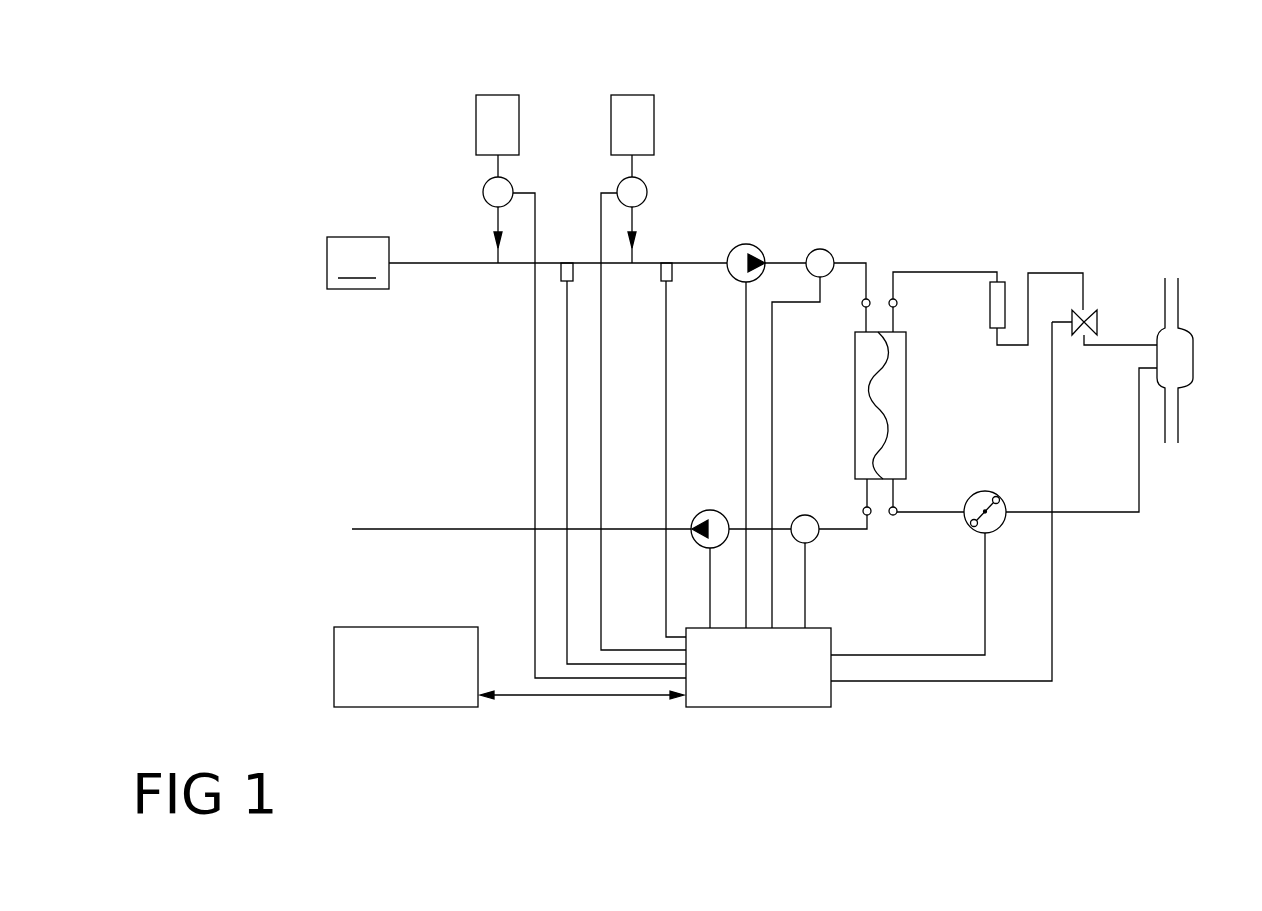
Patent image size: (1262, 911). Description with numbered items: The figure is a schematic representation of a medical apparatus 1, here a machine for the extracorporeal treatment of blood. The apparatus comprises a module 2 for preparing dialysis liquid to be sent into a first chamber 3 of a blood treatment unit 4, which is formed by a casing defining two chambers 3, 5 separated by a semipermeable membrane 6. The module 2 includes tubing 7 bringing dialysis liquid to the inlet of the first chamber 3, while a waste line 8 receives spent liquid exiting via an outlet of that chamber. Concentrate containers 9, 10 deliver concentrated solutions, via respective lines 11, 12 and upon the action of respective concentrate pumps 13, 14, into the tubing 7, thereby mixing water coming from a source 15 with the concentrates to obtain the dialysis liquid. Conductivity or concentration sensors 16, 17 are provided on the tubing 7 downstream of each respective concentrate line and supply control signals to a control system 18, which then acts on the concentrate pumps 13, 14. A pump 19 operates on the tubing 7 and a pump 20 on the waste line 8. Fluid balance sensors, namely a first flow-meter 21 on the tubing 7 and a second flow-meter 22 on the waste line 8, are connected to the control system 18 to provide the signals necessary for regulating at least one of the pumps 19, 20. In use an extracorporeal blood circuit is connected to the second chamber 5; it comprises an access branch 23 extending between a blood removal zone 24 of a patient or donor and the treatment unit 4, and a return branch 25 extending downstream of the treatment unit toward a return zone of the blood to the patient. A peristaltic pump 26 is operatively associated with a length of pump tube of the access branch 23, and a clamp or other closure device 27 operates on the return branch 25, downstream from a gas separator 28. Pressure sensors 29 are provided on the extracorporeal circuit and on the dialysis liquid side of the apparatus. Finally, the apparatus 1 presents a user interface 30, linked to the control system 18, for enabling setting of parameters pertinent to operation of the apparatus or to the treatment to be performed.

The medical apparatus 1 is at (1147, 735).
The module for preparing dialysis liquid 2 is at (733, 181).
The first chamber 3 is at (862, 354).
The blood treatment unit 4 is at (908, 345).
The second chamber 5 is at (898, 373).
The semipermeable membrane 6 is at (890, 408).
The tubing 7 is at (700, 265).
The waste line 8 is at (398, 529).
The concentrate container 9 is at (476, 125).
The concentrate container 10 is at (654, 120).
The line 11 is at (497, 222).
The line 12 is at (641, 217).
The concentrate pump 13 is at (485, 188).
The concentrate pump 14 is at (621, 188).
The source 15 is at (358, 263).
The conductivity or concentration sensor 16 is at (561, 270).
The conductivity or concentration sensor 17 is at (661, 272).
The control system 18 is at (820, 707).
The pump 19 is at (739, 277).
The pump 20 is at (704, 512).
The first flow-meter 21 is at (820, 249).
The second flow-meter 22 is at (804, 514).
The access branch 23 is at (1107, 512).
The blood removal zone 24 is at (1188, 338).
The return branch 25 is at (1056, 273).
The peristaltic pump 26 is at (1003, 526).
The clamp or closure device 27 is at (1092, 312).
The gas separator 28 is at (1005, 290).
The pressure sensors 29 is at (868, 299).
The user interface 30 is at (467, 707).